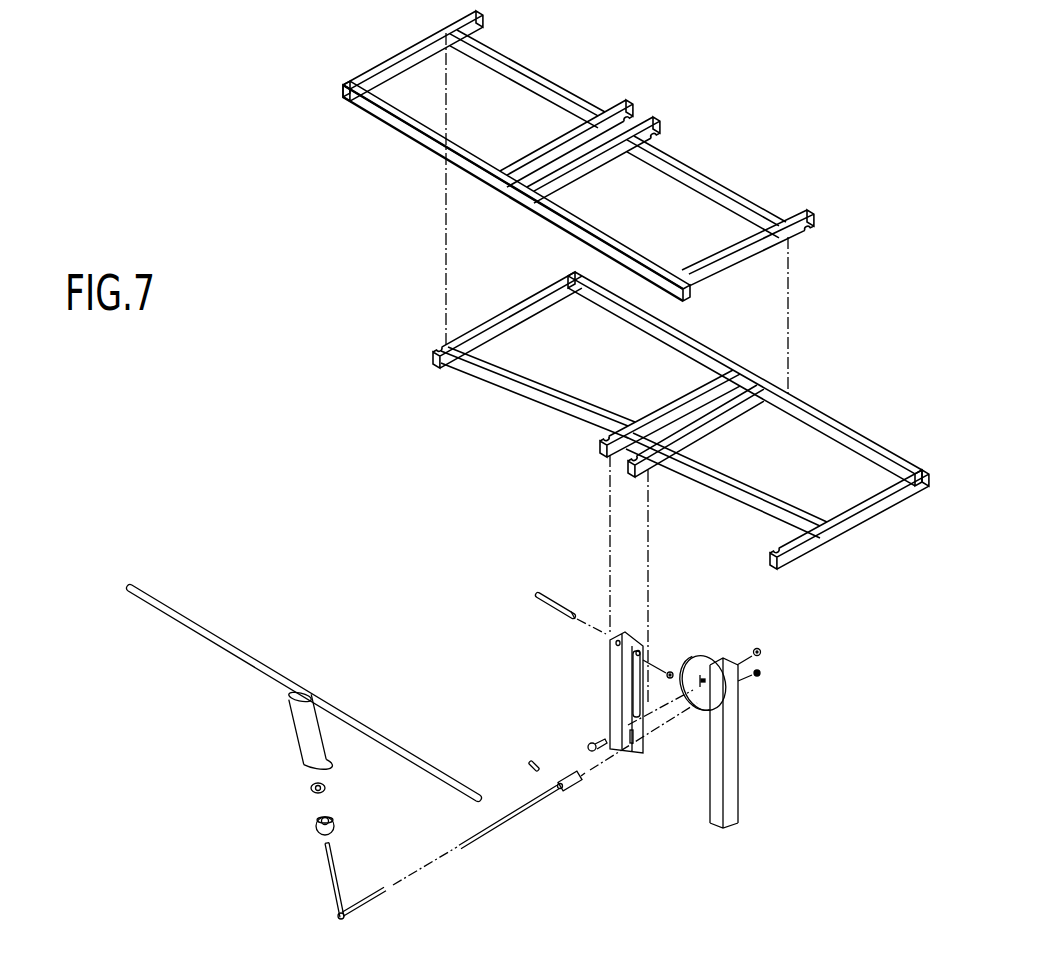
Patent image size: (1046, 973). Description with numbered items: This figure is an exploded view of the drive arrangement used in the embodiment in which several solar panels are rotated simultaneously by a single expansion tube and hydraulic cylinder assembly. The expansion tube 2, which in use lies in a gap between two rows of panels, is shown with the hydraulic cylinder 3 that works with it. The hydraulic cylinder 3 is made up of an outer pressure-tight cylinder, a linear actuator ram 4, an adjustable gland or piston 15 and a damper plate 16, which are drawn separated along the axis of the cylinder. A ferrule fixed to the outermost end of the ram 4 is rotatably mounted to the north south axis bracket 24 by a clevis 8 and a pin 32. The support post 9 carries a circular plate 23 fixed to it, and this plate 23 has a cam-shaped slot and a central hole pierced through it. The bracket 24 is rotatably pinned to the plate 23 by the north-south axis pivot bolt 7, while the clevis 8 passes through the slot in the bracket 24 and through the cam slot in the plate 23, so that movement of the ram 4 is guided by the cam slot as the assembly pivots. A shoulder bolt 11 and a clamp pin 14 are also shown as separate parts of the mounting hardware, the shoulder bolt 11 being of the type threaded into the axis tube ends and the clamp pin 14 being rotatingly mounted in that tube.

The clamp pin 14 is at (627, 358).
The expansion tube 2 is at (263, 693).
The hydraulic cylinder 3 is at (244, 730).
The damper plate 16 is at (251, 809).
The adjustable gland or piston 15 is at (380, 832).
The linear actuator ram 4 is at (470, 804).
The shoulder bolt 11 is at (529, 614).
The north south axis bracket 24 is at (589, 692).
The north-south axis pivot bolt 7 is at (545, 721).
The pin 32 is at (486, 742).
The north south axis-positioning clamp (clevis) 8 is at (619, 804).
The circular plate 23 is at (728, 649).
The support post 9 is at (768, 739).